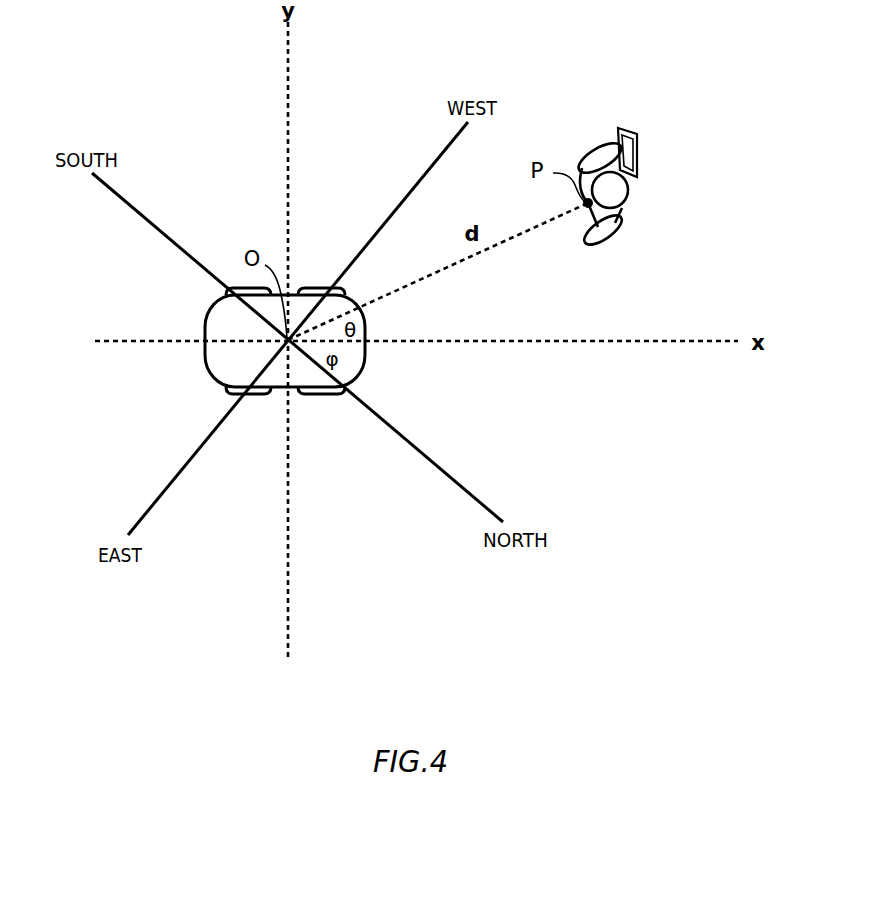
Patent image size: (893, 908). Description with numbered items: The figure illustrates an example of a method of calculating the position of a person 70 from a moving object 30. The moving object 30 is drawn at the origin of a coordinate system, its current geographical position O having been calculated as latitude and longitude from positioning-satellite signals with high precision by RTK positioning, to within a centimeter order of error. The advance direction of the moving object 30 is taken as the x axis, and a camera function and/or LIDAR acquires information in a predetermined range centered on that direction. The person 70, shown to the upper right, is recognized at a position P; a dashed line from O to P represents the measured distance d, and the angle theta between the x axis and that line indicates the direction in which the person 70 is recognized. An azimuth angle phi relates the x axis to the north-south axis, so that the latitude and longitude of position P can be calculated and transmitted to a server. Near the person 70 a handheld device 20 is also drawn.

The mobile terminal 20 is at (632, 128).
The moving object 30 is at (207, 362).
The person 70 is at (613, 240).